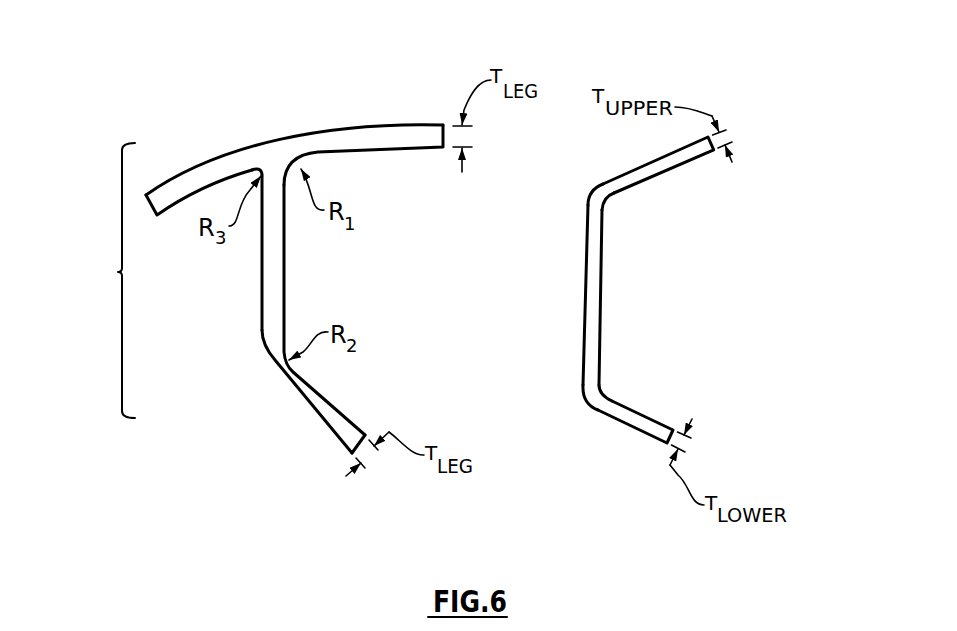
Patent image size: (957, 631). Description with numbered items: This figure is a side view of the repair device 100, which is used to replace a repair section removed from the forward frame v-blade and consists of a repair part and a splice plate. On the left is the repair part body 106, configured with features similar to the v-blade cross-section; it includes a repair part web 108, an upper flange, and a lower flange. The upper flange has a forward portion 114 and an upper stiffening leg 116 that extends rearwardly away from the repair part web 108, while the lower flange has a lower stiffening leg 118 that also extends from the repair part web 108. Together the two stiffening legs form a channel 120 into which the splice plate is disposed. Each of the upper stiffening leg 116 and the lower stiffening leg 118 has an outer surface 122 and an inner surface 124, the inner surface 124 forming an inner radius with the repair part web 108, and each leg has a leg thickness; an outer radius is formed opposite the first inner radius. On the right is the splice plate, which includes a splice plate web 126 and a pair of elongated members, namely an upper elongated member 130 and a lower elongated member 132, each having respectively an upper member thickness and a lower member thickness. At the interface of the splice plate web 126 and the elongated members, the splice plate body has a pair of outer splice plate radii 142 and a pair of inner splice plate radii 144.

The repair device 100 is at (595, 52).
The repair part body 106 is at (117, 272).
The repair part web 108 is at (229, 284).
The forward portion 114 is at (184, 113).
The upper stiffening leg 116 is at (400, 65).
The lower stiffening leg 118 is at (398, 488).
The channel 120 is at (362, 282).
The outer surface 122 is at (377, 125).
The inner surface 124 is at (380, 150).
The splice plate web 126 is at (569, 303).
The upper elongated member 130 is at (718, 146).
The lower elongated member 132 is at (678, 442).
The outer splice plate radii 142 is at (588, 186).
The inner splice plate radii 144 is at (616, 206).